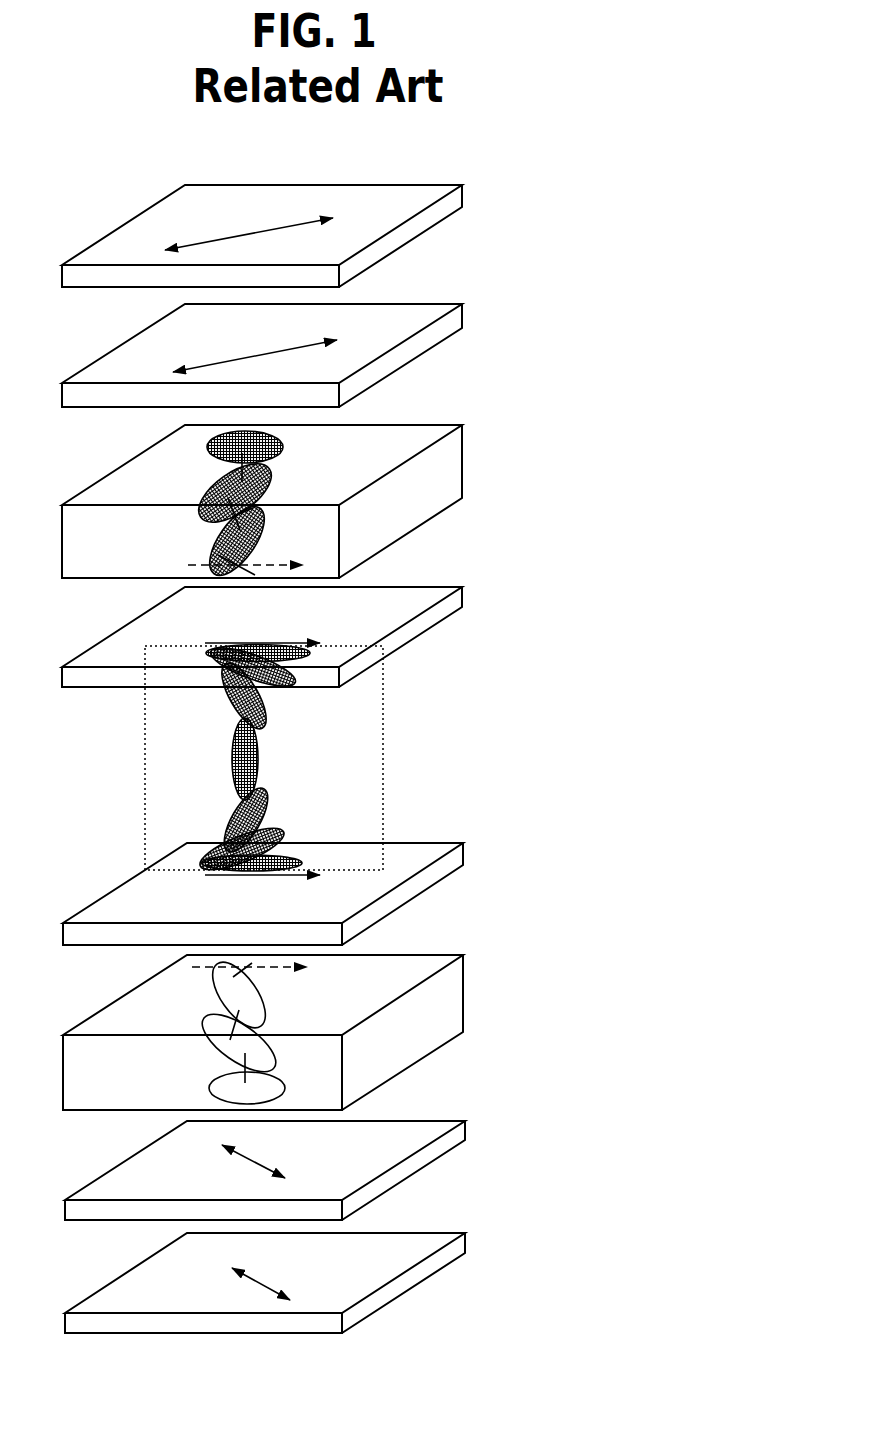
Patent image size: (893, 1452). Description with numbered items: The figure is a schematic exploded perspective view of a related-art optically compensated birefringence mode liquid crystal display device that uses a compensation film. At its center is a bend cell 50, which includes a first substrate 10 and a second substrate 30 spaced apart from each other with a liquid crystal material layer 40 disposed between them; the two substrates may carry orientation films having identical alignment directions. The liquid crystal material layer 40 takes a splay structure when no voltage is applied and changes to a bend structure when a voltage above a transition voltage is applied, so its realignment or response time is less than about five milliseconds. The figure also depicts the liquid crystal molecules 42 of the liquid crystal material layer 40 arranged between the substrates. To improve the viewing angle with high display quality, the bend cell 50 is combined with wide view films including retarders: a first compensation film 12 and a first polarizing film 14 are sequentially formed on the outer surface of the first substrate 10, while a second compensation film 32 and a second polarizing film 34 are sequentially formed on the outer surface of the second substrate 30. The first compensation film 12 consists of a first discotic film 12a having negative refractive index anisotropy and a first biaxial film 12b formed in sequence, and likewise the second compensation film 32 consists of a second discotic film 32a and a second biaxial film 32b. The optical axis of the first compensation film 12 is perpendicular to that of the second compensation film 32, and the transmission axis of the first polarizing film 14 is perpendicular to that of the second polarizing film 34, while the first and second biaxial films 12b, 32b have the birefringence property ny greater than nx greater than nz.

The second polarizing film 34 is at (463, 192).
The second compensation film 32 is at (332, 441).
The second biaxial film 32b is at (463, 311).
The second discotic film 32a is at (303, 504).
The second substrate 30 is at (463, 594).
The liquid crystal material layer 40 is at (356, 742).
The liquid crystal molecules 42 is at (258, 758).
The bend cell 50 is at (332, 761).
The first substrate 10 is at (465, 851).
The first compensation film 12 is at (333, 1087).
The first discotic film 12a is at (465, 988).
The first biaxial film 12b is at (306, 1166).
The first polarizing film 14 is at (467, 1240).